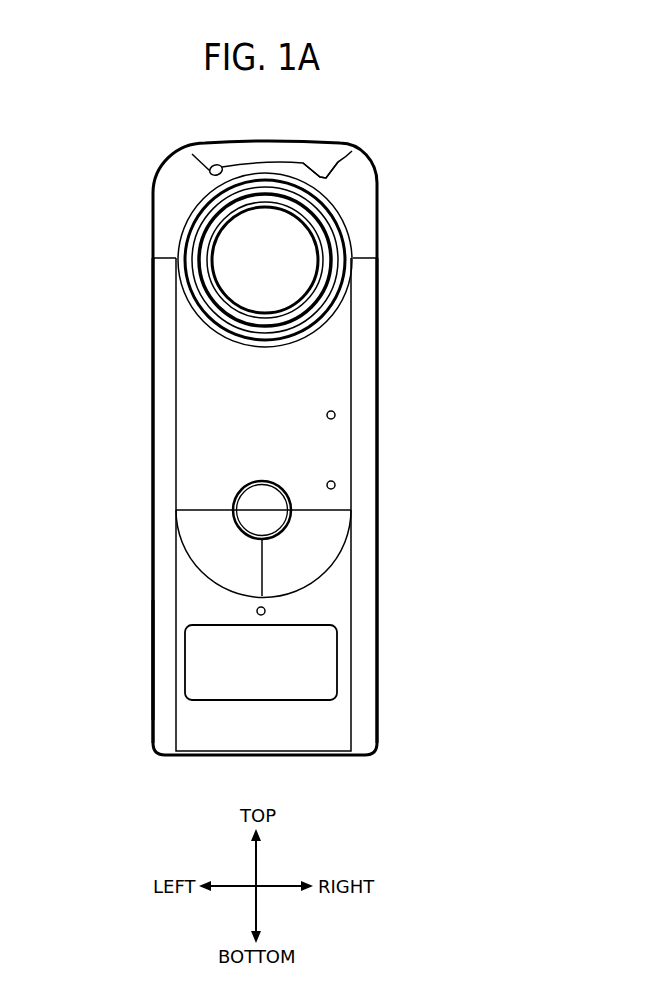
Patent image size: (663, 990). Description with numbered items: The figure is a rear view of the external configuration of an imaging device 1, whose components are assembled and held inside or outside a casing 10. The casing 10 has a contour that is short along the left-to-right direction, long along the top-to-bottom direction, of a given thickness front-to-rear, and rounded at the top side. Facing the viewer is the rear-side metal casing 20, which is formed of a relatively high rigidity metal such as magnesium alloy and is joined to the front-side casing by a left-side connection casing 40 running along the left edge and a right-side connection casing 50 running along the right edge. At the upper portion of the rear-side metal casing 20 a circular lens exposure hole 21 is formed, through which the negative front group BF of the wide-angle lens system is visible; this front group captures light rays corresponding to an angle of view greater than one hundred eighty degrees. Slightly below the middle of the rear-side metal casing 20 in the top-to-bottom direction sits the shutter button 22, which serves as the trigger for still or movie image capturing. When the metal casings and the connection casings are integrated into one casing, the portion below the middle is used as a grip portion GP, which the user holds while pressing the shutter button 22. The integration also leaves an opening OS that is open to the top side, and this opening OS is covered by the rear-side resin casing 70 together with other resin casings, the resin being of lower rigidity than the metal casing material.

The imaging device 1 is at (375, 153).
The casing 10 is at (146, 191).
The rear-side metal casing 20 is at (193, 387).
The lens exposure hole 21 is at (300, 212).
The shutter button 22 is at (255, 500).
The left-side connection casing 40 is at (151, 510).
The right-side connection casing 50 is at (378, 520).
The rear-side resin casing 70 is at (311, 158).
The opening OS is at (208, 173).
The negative front group BF is at (227, 277).
The grip portion GP is at (142, 656).